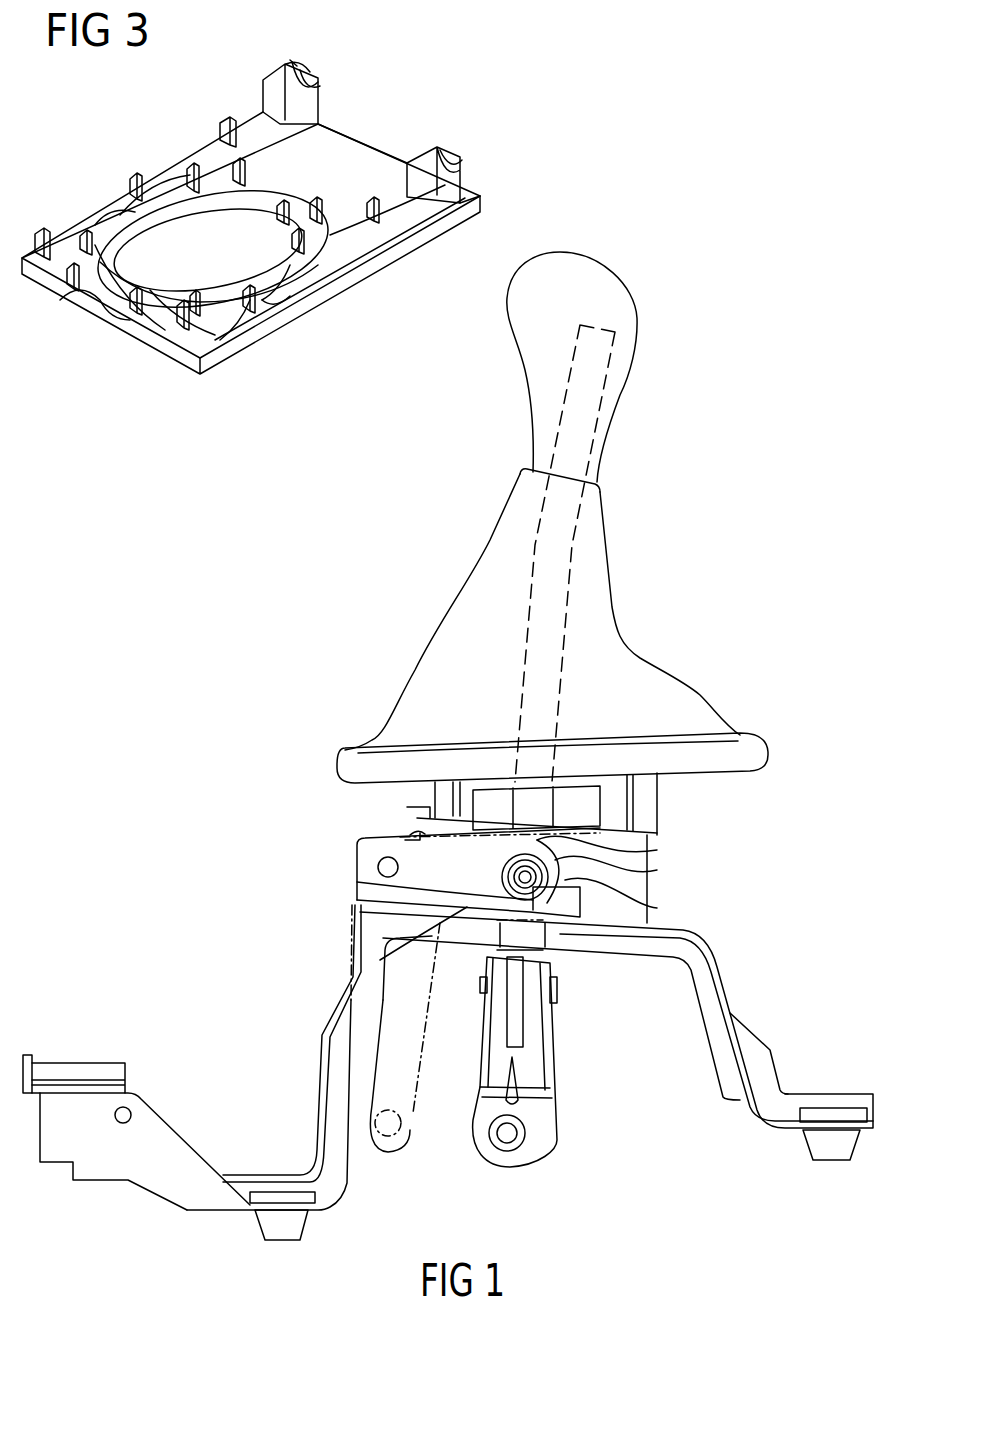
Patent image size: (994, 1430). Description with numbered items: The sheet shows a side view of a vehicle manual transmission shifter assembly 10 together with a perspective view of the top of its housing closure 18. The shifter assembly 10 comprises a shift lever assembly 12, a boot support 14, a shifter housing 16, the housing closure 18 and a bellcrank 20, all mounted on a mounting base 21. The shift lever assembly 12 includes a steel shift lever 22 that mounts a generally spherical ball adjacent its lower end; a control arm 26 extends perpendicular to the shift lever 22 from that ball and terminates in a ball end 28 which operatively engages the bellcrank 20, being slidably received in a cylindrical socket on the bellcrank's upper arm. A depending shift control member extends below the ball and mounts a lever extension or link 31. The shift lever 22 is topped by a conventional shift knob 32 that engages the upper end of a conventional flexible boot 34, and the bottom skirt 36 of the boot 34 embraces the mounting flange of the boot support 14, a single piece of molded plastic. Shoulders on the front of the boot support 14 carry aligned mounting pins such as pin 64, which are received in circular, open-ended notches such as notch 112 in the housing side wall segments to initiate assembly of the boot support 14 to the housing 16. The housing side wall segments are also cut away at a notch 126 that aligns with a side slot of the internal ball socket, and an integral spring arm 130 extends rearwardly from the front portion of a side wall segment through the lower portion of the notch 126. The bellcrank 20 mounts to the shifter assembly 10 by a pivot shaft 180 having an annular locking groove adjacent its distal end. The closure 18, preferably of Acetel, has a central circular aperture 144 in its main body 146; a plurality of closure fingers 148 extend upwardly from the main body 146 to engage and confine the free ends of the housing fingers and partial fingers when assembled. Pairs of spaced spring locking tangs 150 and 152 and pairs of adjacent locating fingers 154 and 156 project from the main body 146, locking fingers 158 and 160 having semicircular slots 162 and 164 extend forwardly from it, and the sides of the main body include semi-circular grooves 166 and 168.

In FIG. 1, the vehicle manual transmission shifter assembly 10 is at (448, 746).
In FIG. 1, the shift lever assembly 12 is at (638, 517).
In FIG. 1, the boot support 14 is at (519, 805).
In FIG. 1, the shifter housing 16 is at (632, 875).
In FIG. 3, the housing closure 18 is at (276, 215).
In FIG. 1, the housing closure 18 is at (411, 892).
In FIG. 1, the bellcrank 20 is at (413, 1142).
In FIG. 1, the mounting base 21 is at (772, 1047).
In FIG. 1, the shift lever 22 is at (587, 626).
In FIG. 1, the control arm 26 is at (648, 908).
In FIG. 1, the ball end 28 is at (548, 872).
In FIG. 1, the lever extension or link 31 is at (548, 1068).
In FIG. 1, the shift knob 32 is at (630, 410).
In FIG. 1, the flexible boot 34 is at (420, 660).
In FIG. 1, the bottom skirt 36 is at (760, 737).
In FIG. 1, the mounting pin 64 is at (415, 835).
In FIG. 1, the circular open-ended notch 112 is at (405, 840).
In FIG. 1, the notch 126 is at (580, 843).
In FIG. 1, the spring arm 130 is at (470, 903).
In FIG. 3, the central circular aperture 144 is at (120, 190).
In FIG. 3, the main body 146 is at (335, 247).
In FIG. 3, the closure fingers 148 is at (262, 222).
In FIG. 3, the spring locking tangs 150 is at (130, 300).
In FIG. 3, the spring locking tangs 152 is at (322, 195).
In FIG. 3, the locating fingers 154 is at (45, 262).
In FIG. 3, the locating fingers 156 is at (228, 122).
In FIG. 3, the locking finger 158 is at (310, 127).
In FIG. 3, the locking finger 160 is at (430, 212).
In FIG. 3, the semicircular slot 162 is at (300, 75).
In FIG. 3, the semicircular slot 164 is at (445, 158).
In FIG. 3, the semi-circular groove 166 is at (110, 215).
In FIG. 3, the semi-circular groove 168 is at (275, 300).
In FIG. 1, the pivot shaft 180 is at (385, 862).